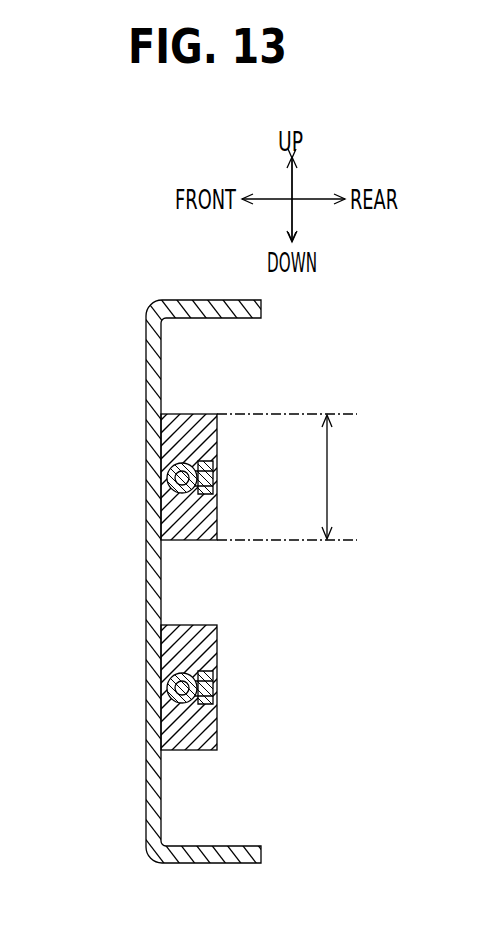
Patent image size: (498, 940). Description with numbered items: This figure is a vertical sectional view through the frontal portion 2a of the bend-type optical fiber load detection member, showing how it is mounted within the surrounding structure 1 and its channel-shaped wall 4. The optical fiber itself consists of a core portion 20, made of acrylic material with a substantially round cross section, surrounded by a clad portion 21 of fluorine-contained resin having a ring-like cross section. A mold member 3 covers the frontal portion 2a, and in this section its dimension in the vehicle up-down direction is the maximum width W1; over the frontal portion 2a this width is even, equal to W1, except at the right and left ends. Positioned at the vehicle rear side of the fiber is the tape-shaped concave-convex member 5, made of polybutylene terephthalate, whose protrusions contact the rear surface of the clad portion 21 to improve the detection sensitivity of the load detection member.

The vehicle body structure 1 is at (155, 546).
The frontal portion 2a is at (240, 383).
The mold member 3 is at (167, 475).
The channel-shaped panel 4 is at (153, 369).
The concave-convex member 5 is at (213, 485).
The core portion 20 is at (175, 461).
The clad portion 21 is at (170, 513).
The maximum width W1 is at (290, 477).